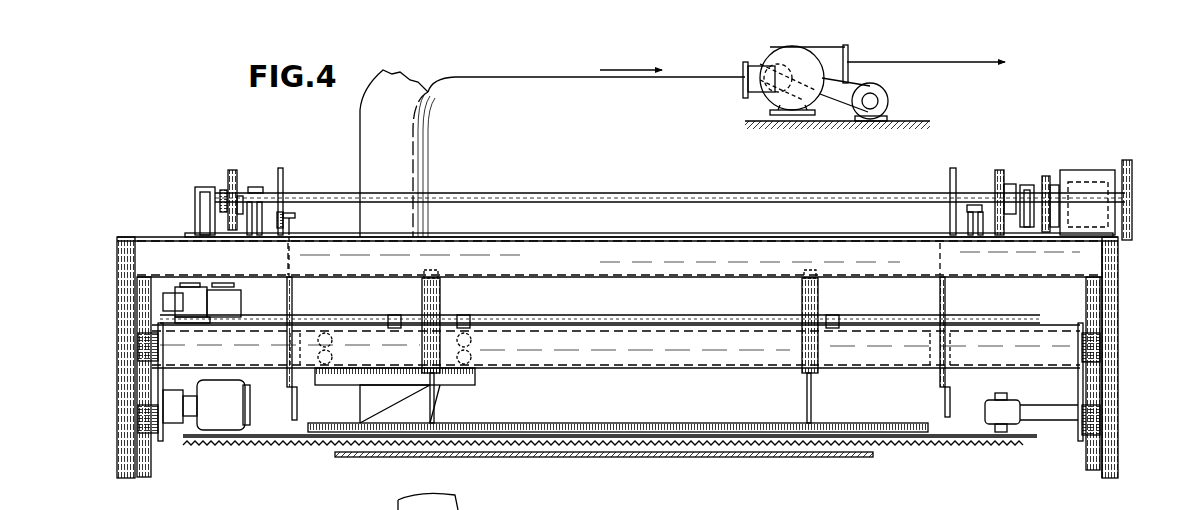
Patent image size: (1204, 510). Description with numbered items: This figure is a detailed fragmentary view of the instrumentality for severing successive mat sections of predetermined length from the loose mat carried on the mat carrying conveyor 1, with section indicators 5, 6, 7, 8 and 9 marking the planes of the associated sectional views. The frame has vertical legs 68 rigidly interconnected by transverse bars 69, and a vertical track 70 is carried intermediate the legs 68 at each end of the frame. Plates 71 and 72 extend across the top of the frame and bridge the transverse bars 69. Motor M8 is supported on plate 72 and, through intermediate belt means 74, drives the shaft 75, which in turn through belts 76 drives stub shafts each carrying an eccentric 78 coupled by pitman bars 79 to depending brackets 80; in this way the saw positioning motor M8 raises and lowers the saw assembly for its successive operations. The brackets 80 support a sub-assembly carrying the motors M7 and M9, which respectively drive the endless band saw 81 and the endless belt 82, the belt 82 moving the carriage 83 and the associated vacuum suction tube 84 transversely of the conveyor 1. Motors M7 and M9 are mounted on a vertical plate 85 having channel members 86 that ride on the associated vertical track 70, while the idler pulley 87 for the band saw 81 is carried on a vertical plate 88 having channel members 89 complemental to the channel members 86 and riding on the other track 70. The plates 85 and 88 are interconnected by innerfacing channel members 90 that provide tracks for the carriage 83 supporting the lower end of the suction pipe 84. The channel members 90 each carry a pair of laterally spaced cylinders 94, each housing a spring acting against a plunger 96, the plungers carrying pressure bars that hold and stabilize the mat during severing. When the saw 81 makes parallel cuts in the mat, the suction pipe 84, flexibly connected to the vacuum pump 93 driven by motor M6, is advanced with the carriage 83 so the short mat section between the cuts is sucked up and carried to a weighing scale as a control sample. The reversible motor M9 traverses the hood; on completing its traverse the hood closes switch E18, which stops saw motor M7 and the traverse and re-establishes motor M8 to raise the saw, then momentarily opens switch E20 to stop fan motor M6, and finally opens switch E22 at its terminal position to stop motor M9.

The mat carrying conveyor 1 is at (758, 458).
The section line 5- 5 is at (108, 123).
The section line 6- 6 is at (112, 277).
The section line 7- 7 is at (112, 389).
The section line 8- 8 is at (302, 138).
The section line 9- 9 is at (360, 138).
The vertical legs 68 is at (128, 465).
The transverse bars 69 is at (1066, 270).
The vertical track 70 is at (152, 470).
The plate 71 is at (192, 235).
The plate 72 is at (1112, 240).
The belt means 74 is at (1047, 176).
The shaft 75 is at (672, 205).
The belts 76 is at (998, 177).
The eccentric 78 is at (283, 182).
The pitman bars 79 is at (292, 302).
The depending brackets 80 is at (297, 412).
The endless band saw 81 is at (270, 440).
The endless belt 82 is at (275, 290).
The carriage 83 is at (466, 376).
The vacuum suction tube 84 is at (425, 222).
The vertical plate 85 is at (158, 382).
The channel members 86 is at (145, 345).
The idler pulley 87 is at (1008, 400).
The vertical plate 88 is at (1078, 398).
The channel members 89 is at (1090, 352).
The innerfacing channel members 90 is at (708, 352).
The vacuum pump 93 is at (762, 104).
The cylinders 94 is at (440, 310).
The plunger 96 is at (436, 404).
The motor M6 is at (890, 104).
The motor M7 is at (210, 428).
The motor M8 is at (1093, 170).
The motor M9 is at (178, 300).
The switch E18 is at (834, 315).
The switch E20 is at (466, 315).
The switch E22 is at (396, 315).